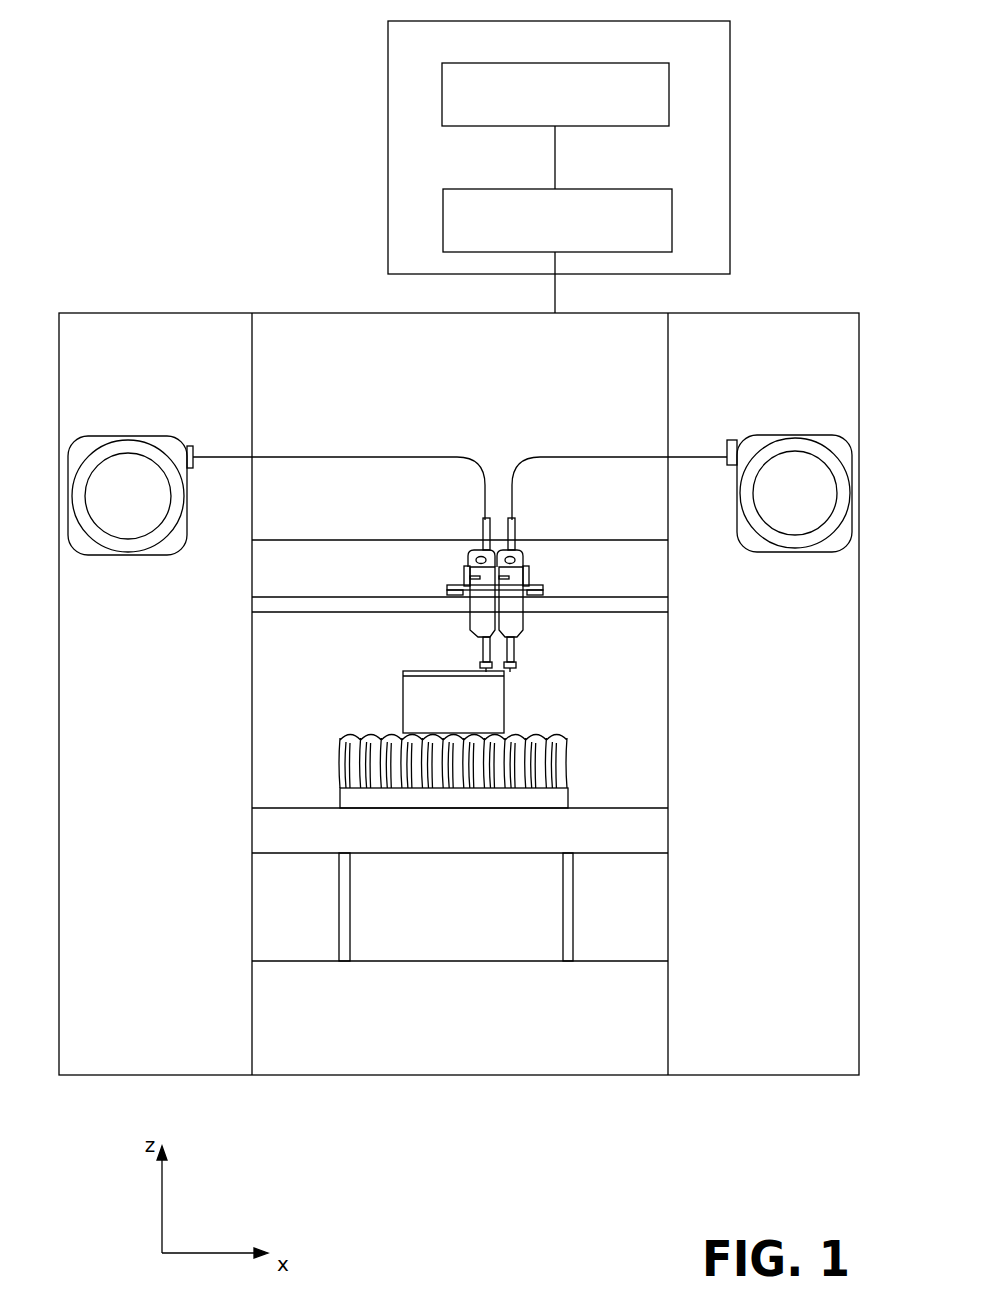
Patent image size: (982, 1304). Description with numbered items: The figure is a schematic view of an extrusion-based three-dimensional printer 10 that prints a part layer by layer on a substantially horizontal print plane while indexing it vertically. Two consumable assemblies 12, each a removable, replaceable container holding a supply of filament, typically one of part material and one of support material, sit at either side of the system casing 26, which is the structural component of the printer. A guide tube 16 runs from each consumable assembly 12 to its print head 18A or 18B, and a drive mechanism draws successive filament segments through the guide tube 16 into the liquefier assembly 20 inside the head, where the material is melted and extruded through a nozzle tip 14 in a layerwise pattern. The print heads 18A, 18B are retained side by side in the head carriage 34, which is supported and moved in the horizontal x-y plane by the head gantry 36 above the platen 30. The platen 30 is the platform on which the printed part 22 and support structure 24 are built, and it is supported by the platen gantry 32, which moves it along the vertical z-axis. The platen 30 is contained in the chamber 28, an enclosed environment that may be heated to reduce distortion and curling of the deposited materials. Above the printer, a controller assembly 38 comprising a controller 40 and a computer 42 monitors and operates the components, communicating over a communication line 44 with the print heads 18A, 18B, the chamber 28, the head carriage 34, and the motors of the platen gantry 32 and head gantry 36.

The 3D printer 10 is at (178, 95).
The consumable assembly 12 is at (117, 437).
The nozzle tip 14 is at (487, 670).
The guide tube 16 is at (268, 457).
The print head 18A is at (470, 578).
The print head 18B is at (523, 578).
The liquefier assembly 20 is at (483, 650).
The 3D part 22 is at (372, 735).
The support structure 24 is at (568, 793).
The system casing 26 is at (252, 715).
The chamber 28 is at (264, 755).
The platen 30 is at (663, 844).
The platen gantry 32 is at (578, 944).
The head carriage 34 is at (447, 587).
The head gantry 36 is at (327, 597).
The controller assembly 38 is at (730, 45).
The controller 40 is at (672, 208).
The computer 42 is at (669, 75).
The communication line 44 is at (557, 285).